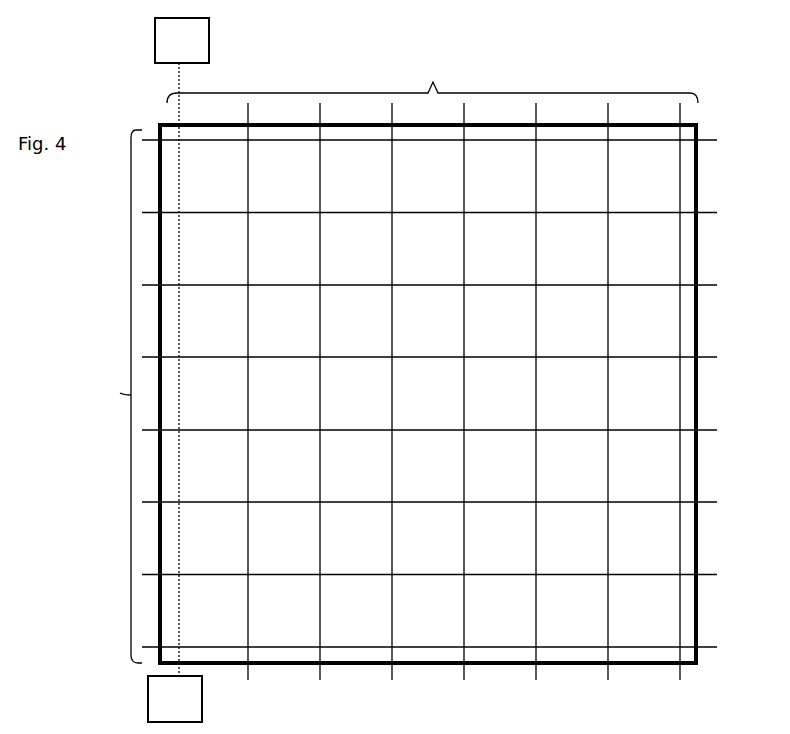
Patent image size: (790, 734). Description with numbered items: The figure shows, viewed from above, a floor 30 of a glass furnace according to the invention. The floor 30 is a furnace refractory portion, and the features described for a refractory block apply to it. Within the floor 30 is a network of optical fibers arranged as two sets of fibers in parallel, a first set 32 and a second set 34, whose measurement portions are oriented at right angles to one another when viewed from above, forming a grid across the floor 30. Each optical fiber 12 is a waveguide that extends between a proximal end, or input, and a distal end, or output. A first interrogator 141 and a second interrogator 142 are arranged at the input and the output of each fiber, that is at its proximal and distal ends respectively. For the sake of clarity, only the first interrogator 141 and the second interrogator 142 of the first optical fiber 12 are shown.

The floor 30 is at (650, 125).
The optical fiber 12 is at (175, 168).
The first interrogator 141 is at (182, 40).
The second interrogator 142 is at (175, 699).
The first set of fibers 32 is at (110, 396).
The second set of fibers 34 is at (432, 71).